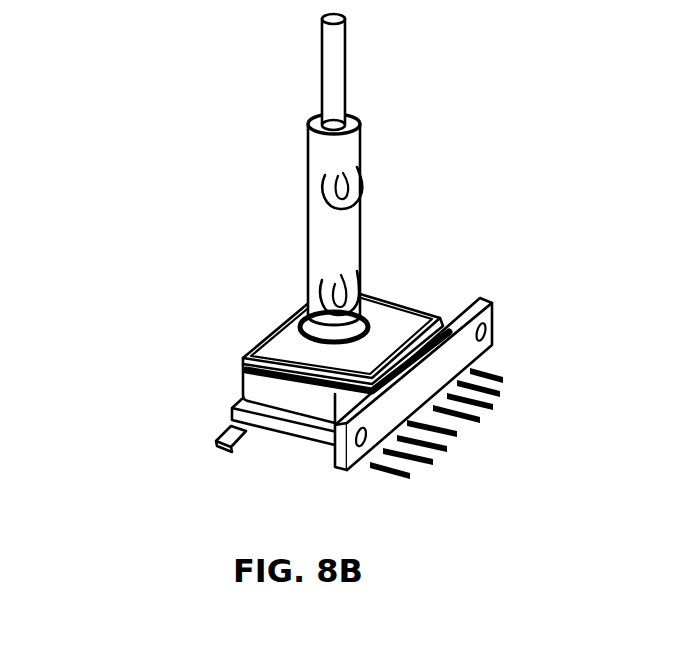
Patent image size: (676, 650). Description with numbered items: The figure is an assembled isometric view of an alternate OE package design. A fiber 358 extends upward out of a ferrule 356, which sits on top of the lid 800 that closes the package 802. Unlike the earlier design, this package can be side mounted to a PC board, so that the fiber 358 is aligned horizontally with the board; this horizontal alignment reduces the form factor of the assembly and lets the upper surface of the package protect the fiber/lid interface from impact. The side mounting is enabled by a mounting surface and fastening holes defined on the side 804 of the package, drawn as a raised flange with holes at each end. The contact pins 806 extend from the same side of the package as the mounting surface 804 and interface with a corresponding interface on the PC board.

The fiber 358 is at (335, 60).
The ferrule 356 is at (332, 163).
The lid 800 is at (283, 338).
The package 802 is at (277, 398).
The side 804 is at (493, 330).
The contact pins 806 is at (420, 437).